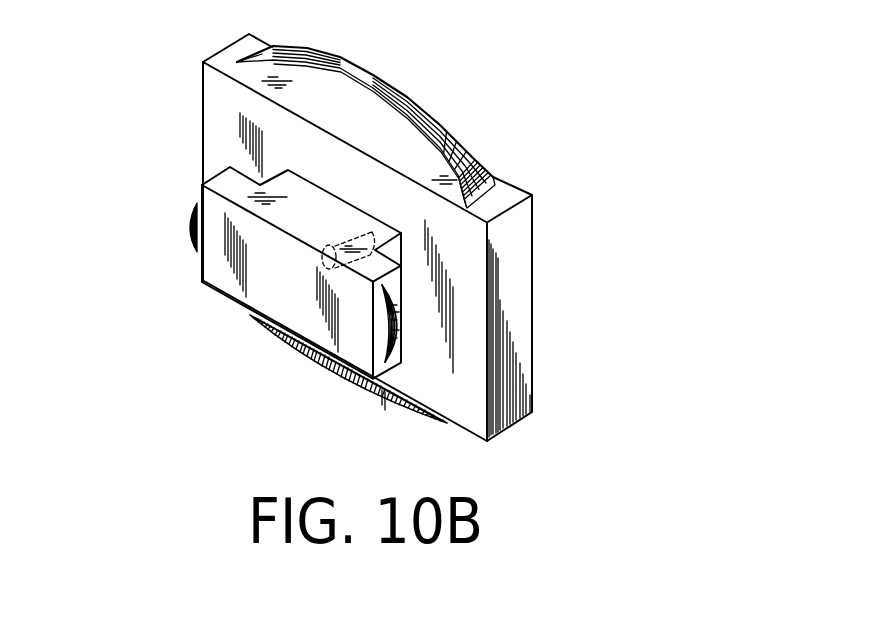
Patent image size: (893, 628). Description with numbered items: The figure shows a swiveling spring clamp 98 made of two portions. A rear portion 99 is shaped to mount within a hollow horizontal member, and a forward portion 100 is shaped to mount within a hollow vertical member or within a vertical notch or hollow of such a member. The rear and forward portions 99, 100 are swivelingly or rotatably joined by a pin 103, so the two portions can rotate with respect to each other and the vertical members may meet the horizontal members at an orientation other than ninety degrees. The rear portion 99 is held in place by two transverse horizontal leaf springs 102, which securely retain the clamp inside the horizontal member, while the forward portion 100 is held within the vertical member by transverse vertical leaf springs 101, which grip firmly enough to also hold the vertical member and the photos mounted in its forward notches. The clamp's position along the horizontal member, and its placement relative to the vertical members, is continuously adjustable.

The spring clamp 98 is at (363, 229).
The rear portion 99 is at (512, 252).
The forward portion 100 is at (278, 287).
The vertical leaf springs 101 is at (190, 229).
The horizontal leaf springs 102 is at (437, 132).
The pin 103 is at (338, 236).